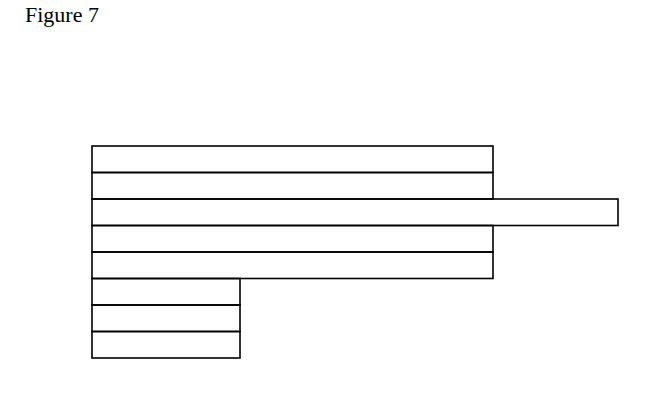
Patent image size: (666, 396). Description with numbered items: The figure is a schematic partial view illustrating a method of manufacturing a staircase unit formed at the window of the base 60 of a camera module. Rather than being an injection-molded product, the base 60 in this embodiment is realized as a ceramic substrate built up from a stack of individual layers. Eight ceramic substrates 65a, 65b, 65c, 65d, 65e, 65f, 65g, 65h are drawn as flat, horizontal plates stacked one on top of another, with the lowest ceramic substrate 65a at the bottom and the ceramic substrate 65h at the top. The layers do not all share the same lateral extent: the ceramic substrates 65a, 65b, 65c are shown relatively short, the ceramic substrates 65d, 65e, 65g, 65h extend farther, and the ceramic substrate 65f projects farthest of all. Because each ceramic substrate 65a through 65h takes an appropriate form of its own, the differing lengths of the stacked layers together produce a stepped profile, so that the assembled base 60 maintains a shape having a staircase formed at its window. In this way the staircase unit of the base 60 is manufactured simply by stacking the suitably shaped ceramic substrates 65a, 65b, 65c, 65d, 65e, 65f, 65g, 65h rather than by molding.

The base 60 is at (137, 143).
The ceramic substrate 65a is at (102, 345).
The ceramic substrate 65b is at (102, 318).
The ceramic substrate 65c is at (102, 292).
The ceramic substrate 65d is at (102, 265).
The ceramic substrate 65e is at (102, 238).
The ceramic substrate 65f is at (102, 212).
The ceramic substrate 65g is at (102, 188).
The ceramic substrate 65h is at (102, 163).